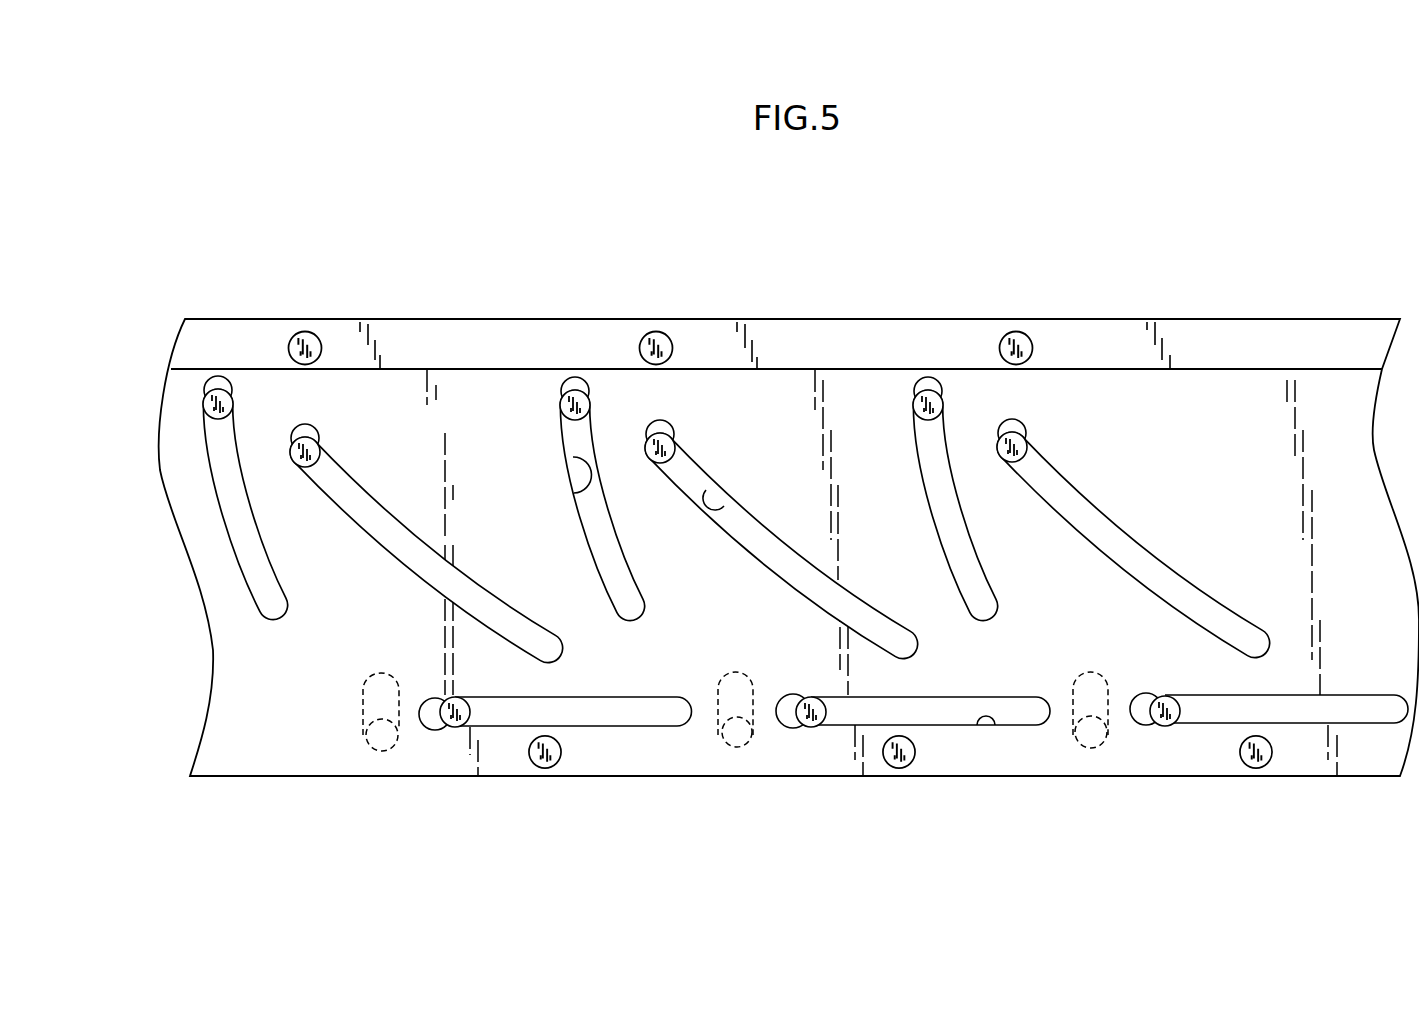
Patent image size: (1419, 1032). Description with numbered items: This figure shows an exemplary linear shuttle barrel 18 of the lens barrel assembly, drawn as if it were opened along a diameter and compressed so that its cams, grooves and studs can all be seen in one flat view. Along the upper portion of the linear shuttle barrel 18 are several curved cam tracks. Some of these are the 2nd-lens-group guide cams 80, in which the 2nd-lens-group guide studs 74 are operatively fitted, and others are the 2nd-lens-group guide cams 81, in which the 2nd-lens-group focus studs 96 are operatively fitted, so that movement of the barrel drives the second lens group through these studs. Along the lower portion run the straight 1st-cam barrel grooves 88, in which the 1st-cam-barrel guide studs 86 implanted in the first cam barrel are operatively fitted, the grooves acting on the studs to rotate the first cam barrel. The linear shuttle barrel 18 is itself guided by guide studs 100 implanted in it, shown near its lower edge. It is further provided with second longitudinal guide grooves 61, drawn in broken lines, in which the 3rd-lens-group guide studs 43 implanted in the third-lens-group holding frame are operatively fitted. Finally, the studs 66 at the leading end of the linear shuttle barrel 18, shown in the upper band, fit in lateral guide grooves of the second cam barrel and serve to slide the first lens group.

The linear shuttle barrel 18 is at (1227, 367).
The studs 66 is at (1019, 331).
The 2nd-lens-group guide cams 81 is at (244, 572).
The 2nd-lens-group focus studs 96 is at (570, 389).
The 2nd-lens-group guide studs 74 is at (669, 446).
The 2nd-lens-group guide cams 80 is at (722, 503).
The second longitudinal guide grooves 61 is at (372, 710).
The 1st-cam-barrel guide studs 86 is at (813, 727).
The 1st-cam barrel grooves 88 is at (993, 726).
The 3rd-lens-group guide studs 43 is at (1100, 746).
The guide studs 100 is at (1264, 768).